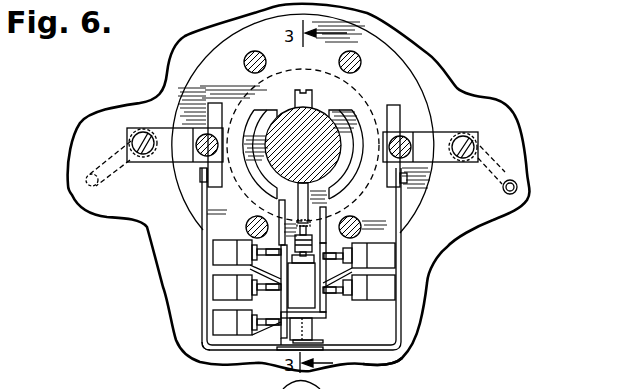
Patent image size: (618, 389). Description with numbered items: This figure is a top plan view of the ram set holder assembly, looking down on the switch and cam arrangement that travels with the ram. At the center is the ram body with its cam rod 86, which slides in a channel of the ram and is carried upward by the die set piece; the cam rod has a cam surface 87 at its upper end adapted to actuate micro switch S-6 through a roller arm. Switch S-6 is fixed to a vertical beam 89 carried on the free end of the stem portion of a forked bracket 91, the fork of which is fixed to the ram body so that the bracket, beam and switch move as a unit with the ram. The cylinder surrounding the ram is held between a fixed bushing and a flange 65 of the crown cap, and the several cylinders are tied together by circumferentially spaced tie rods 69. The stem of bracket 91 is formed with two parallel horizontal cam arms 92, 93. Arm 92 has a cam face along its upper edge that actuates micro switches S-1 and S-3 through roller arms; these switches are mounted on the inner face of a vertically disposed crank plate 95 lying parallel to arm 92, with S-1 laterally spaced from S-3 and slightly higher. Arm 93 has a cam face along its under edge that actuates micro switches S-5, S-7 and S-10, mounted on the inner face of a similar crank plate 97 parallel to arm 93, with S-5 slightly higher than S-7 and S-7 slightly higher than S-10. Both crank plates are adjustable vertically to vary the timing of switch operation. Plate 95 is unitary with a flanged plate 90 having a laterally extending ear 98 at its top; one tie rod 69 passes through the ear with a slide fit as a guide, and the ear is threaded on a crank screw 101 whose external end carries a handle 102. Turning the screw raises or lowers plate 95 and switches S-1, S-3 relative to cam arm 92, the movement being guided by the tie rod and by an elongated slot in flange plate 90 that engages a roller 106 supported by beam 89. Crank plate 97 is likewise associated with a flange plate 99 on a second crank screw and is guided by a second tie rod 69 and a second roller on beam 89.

The flange 65 is at (195, 67).
The tie rods 69 is at (247, 55).
The cam rod 86 is at (303, 177).
The cam surface 87 is at (310, 222).
The vertical beam 89 is at (312, 323).
The flanged plate 90 is at (415, 352).
The forked bracket 91 is at (357, 117).
The cam arm 92 is at (326, 313).
The cam arm 93 is at (262, 343).
The crank plate 95 is at (405, 207).
The crank plate 97 is at (203, 203).
The ear 98 is at (478, 108).
The flange plate 99 is at (207, 352).
The crank screw 101 is at (478, 147).
The handle 102 is at (503, 167).
The roller 106 is at (318, 355).
The micro switch S-5 is at (213, 248).
The micro switch S-7 is at (213, 283).
The micro switch S-10 is at (213, 318).
The micro switch S-3 is at (395, 258).
The micro switch S-1 is at (395, 292).
The micro switch S-6 is at (301, 281).